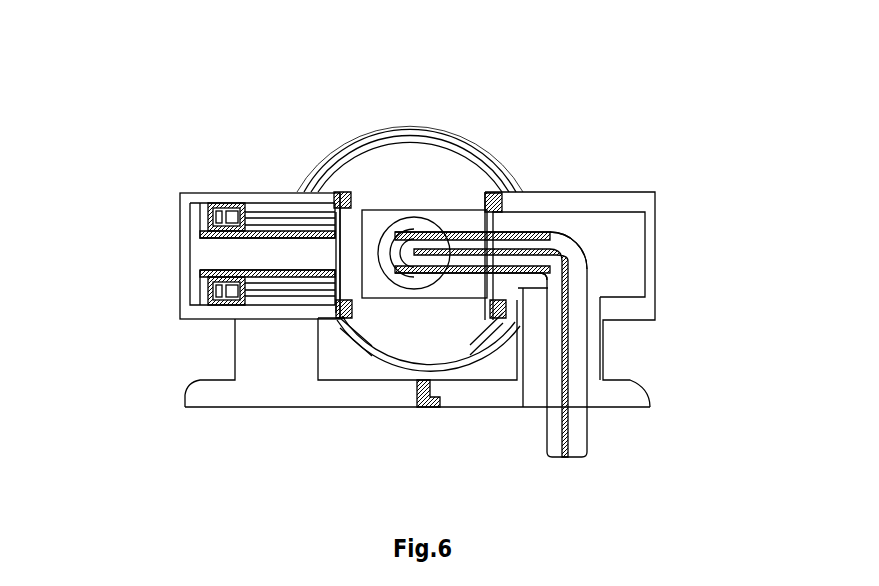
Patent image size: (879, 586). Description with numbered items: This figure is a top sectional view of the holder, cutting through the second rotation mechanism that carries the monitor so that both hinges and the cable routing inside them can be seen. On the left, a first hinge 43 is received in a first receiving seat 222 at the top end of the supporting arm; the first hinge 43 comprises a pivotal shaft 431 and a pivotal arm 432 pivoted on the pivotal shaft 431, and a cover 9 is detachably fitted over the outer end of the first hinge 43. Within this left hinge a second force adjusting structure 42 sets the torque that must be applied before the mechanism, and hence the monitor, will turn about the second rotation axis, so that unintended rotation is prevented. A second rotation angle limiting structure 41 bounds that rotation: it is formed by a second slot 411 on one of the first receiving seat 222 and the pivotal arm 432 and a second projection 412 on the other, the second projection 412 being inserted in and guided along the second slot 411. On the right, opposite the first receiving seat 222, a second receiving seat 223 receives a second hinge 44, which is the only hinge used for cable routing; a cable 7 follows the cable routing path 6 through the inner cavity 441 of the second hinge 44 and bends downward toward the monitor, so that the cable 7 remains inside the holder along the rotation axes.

The cover 9 is at (187, 230).
The second force adjusting structure 42 is at (233, 222).
The first hinge 43 is at (293, 205).
The pivotal shaft 431 is at (285, 258).
The pivotal arm 432 is at (275, 285).
The first receiving seat 222 is at (347, 200).
The second rotation angle limiting structure 41 is at (352, 203).
The second slot 411 is at (345, 300).
The second projection 412 is at (337, 308).
The second receiving seat 223 is at (498, 195).
The cable 7 is at (493, 253).
The second hinge 44 is at (553, 208).
The inner cavity 441 is at (618, 252).
The cable routing path 6 is at (572, 242).